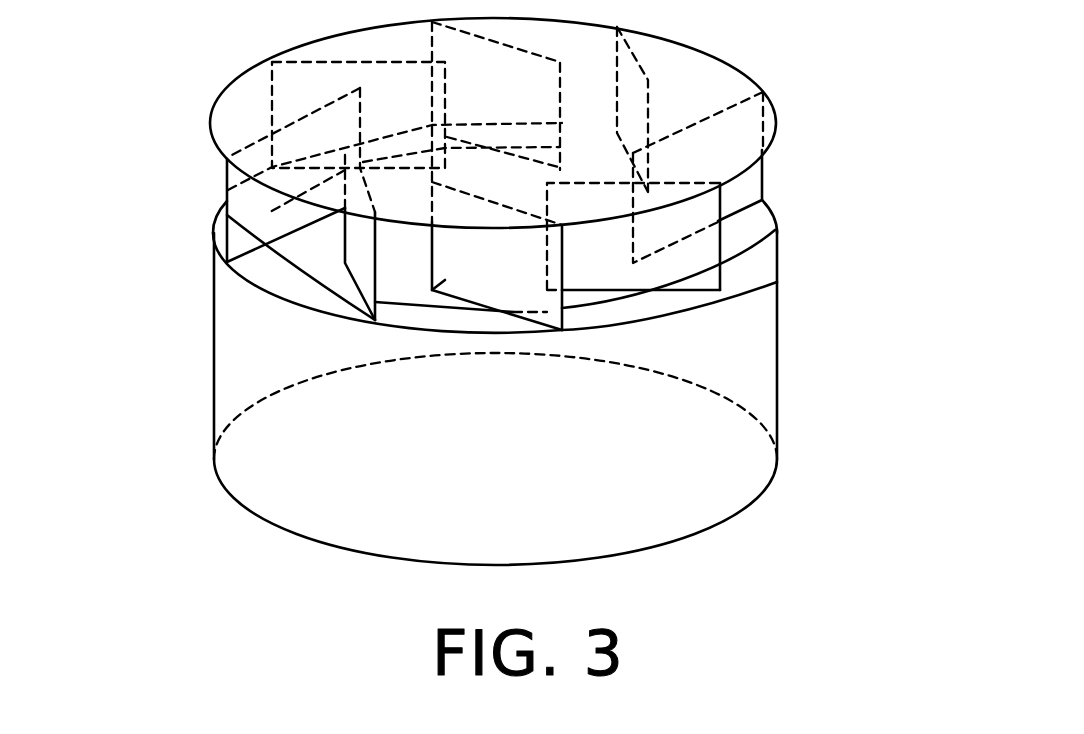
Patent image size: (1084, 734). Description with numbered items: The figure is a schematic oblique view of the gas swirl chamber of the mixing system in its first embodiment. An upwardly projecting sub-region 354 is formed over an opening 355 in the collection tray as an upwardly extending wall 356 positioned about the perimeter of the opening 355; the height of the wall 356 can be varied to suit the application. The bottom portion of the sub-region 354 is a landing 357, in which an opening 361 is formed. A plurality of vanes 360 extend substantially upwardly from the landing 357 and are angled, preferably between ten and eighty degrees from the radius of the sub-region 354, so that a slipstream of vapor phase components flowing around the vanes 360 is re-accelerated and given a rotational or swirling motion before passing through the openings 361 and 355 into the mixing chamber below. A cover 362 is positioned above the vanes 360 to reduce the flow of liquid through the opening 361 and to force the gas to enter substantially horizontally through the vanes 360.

The upwardly projecting sub-region 354 is at (202, 153).
The opening 355 is at (215, 449).
The upwardly extending wall 356 is at (757, 304).
The landing 357 is at (750, 237).
The vanes 360 is at (375, 320).
The opening 361 is at (600, 305).
The cover 362 is at (703, 73).